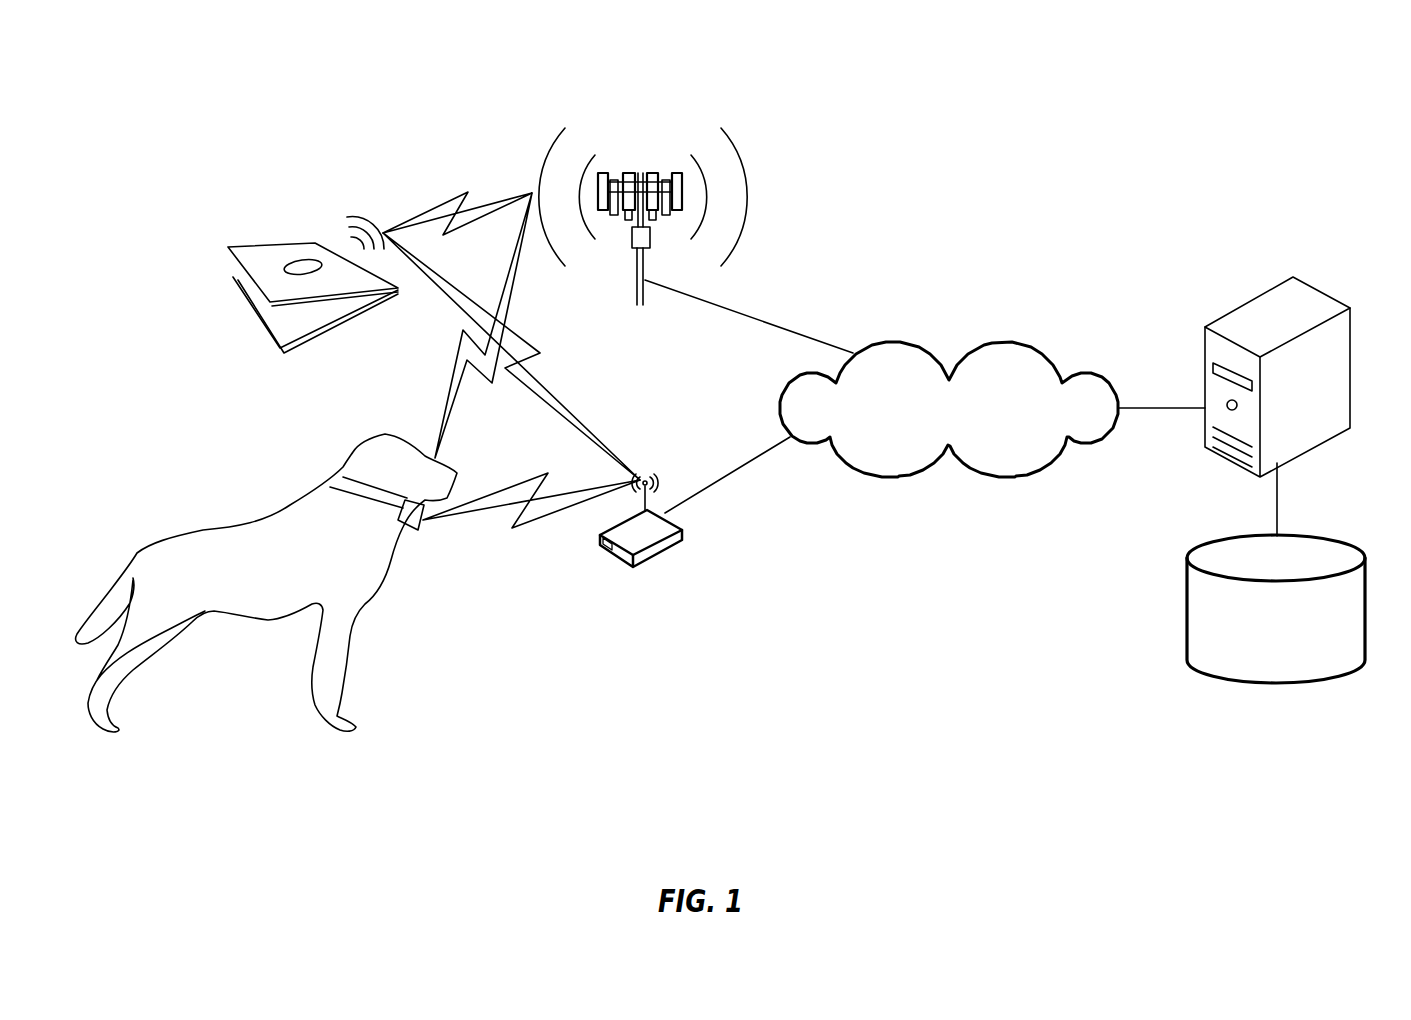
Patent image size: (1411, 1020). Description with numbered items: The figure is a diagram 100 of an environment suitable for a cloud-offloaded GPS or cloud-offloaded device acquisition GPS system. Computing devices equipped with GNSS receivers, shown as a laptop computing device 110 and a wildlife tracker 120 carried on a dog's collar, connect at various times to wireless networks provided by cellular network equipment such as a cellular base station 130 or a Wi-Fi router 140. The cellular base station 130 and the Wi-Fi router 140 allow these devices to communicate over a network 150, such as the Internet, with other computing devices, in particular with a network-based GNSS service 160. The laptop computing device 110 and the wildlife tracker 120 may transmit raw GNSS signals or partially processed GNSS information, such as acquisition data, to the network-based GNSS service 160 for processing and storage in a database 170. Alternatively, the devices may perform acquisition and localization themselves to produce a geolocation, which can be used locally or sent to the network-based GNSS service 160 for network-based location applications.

The diagram 100 is at (1277, 73).
The laptop computing device 110 is at (238, 279).
The wildlife tracker 120 is at (423, 523).
The cellular base station 130 is at (650, 240).
The Wi-Fi router 140 is at (667, 548).
The network 150 is at (1010, 477).
The network-based GNSS service 160 is at (1205, 352).
The database 170 is at (1187, 617).